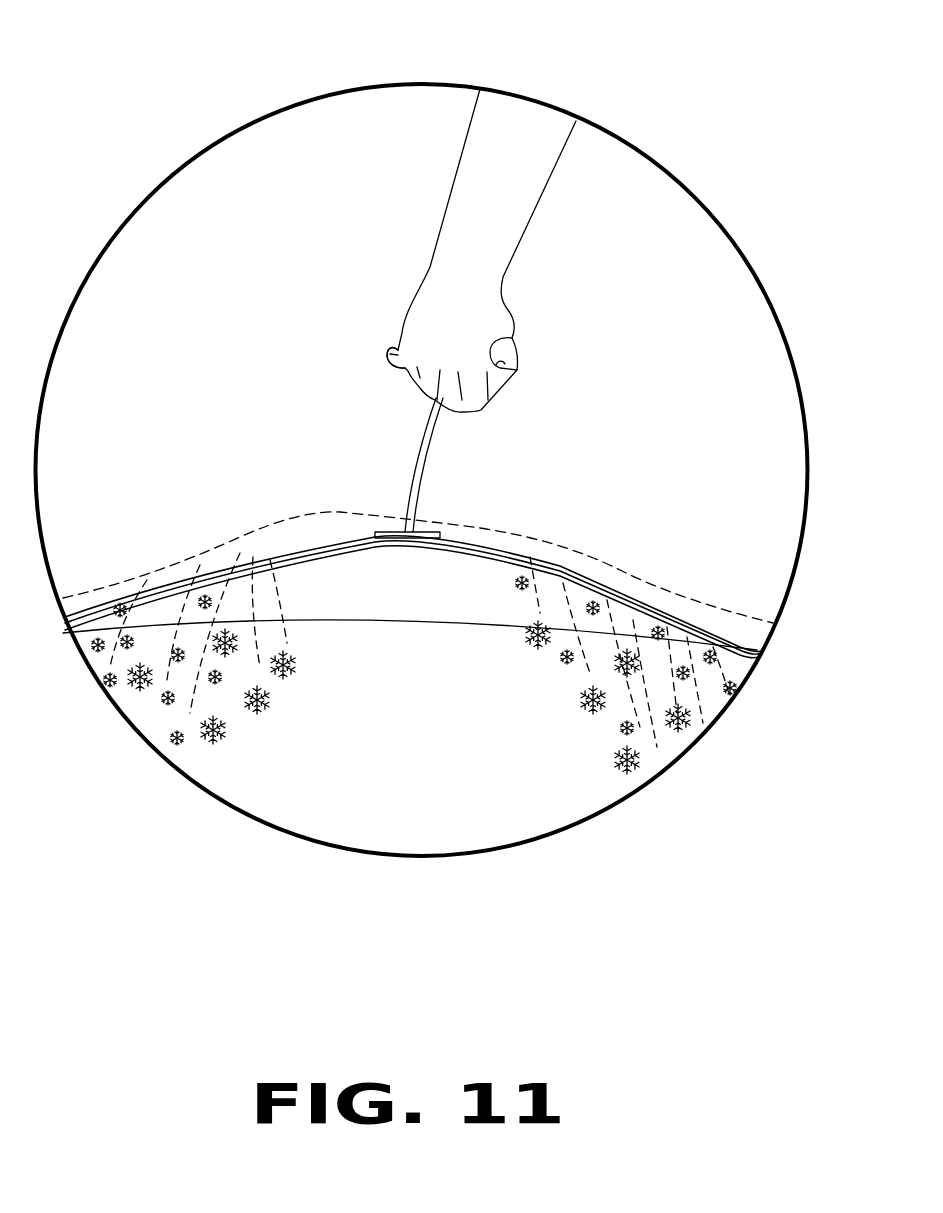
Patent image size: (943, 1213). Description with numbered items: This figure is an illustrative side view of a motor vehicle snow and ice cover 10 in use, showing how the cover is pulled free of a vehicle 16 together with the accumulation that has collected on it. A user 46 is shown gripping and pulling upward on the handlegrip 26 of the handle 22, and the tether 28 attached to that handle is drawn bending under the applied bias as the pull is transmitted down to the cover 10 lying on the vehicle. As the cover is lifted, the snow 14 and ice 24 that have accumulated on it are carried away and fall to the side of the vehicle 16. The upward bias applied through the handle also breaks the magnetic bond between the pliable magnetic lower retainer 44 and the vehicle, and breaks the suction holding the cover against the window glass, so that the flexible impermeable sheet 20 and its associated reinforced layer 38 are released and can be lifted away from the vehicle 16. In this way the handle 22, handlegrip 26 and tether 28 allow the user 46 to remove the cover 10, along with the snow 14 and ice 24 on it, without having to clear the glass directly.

The motor vehicle snow and ice cover 10 is at (667, 109).
The snow 14 is at (485, 525).
The vehicle 16 is at (243, 623).
The flexible impermeable sheet 20 is at (637, 600).
The handle 22 is at (508, 345).
The ice 24 is at (332, 537).
The handlegrip 26 is at (388, 357).
The tether 28 is at (430, 453).
The reinforced layer 38 is at (340, 548).
The pliable magnetic lower retainer 44 is at (435, 547).
The user 46 is at (430, 310).